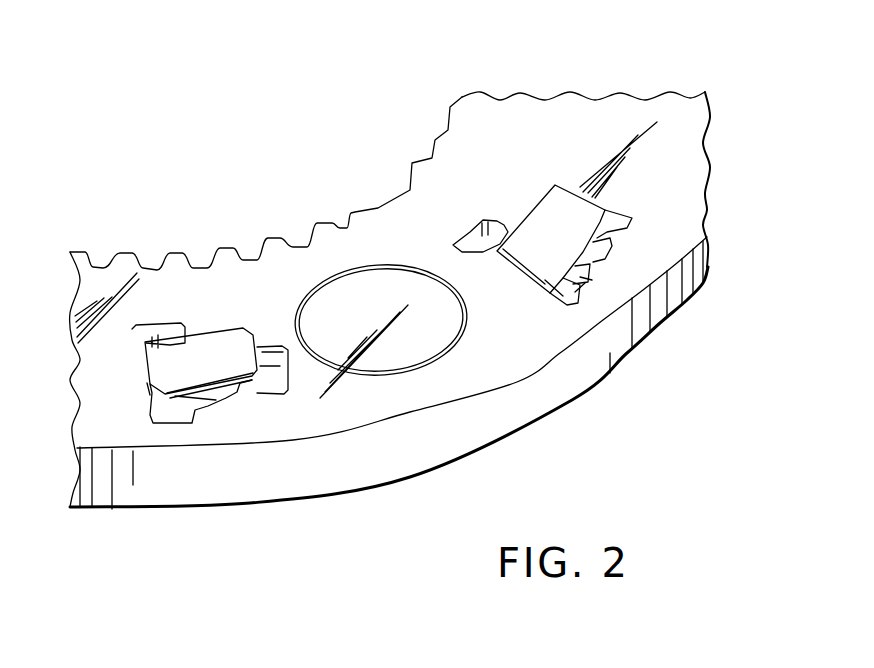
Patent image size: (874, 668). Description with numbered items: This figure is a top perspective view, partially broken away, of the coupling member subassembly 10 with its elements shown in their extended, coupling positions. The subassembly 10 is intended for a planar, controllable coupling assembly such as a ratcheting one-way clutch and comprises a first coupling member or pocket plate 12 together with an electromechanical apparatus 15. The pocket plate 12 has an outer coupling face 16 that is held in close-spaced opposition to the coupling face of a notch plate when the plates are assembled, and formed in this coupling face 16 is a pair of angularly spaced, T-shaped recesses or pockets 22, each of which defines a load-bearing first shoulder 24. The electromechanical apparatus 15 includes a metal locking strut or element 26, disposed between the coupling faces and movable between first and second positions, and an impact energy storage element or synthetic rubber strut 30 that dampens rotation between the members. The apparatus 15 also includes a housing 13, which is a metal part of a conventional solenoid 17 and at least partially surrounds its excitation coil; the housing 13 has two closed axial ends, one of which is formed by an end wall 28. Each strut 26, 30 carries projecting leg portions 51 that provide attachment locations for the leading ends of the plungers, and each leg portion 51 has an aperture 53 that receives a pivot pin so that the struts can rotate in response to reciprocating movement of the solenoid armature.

The coupling member subassembly 10 is at (602, 64).
The first coupling member or pocket plate 12 is at (481, 458).
The housing 13 is at (390, 378).
The electromechanical apparatus 15 is at (346, 262).
The coupling face 16 is at (668, 216).
The solenoid 17 is at (468, 353).
The T-shaped recess or pocket 22 is at (268, 385).
The load-bearing first shoulder 24 is at (147, 383).
The locking strut or element 26 is at (536, 201).
The end wall 28 is at (391, 305).
The impact energy storage element or synthetic rubber strut 30 is at (217, 332).
The projecting leg portion 51 is at (218, 402).
The aperture 53 is at (590, 278).